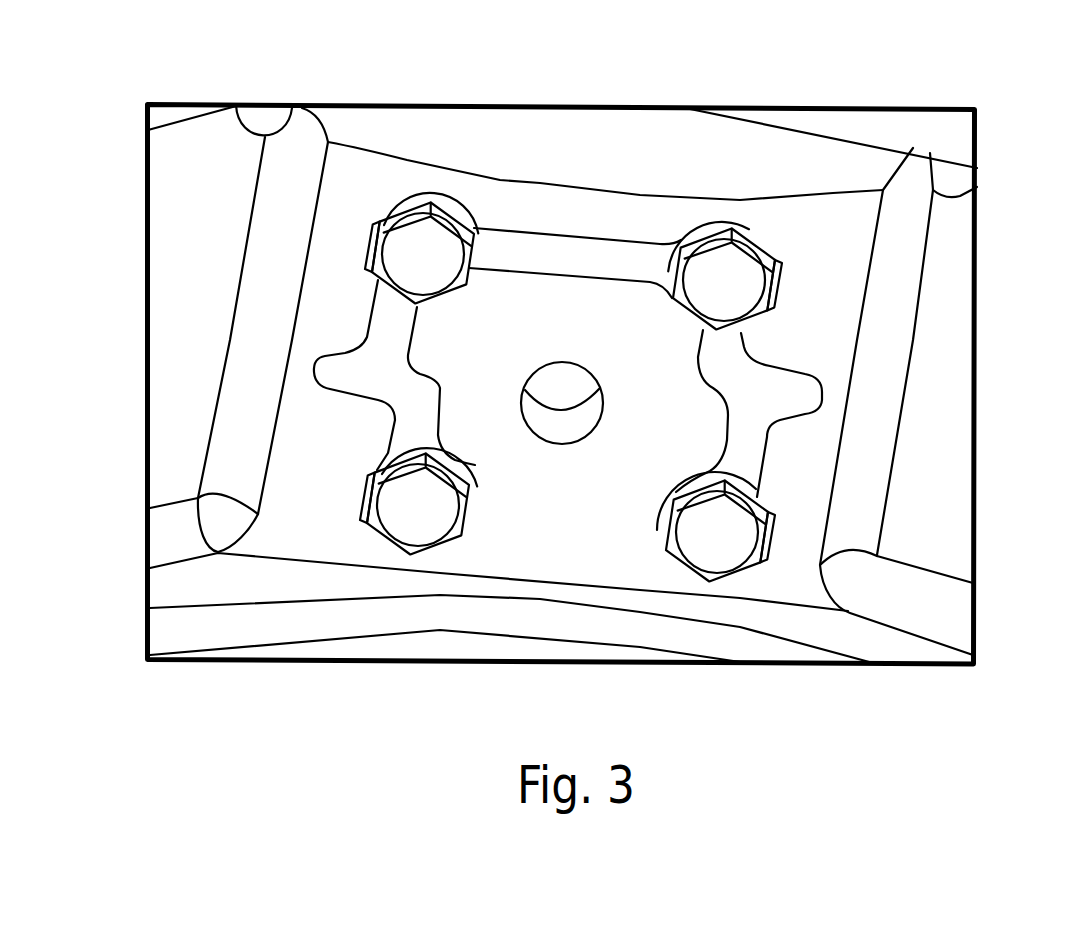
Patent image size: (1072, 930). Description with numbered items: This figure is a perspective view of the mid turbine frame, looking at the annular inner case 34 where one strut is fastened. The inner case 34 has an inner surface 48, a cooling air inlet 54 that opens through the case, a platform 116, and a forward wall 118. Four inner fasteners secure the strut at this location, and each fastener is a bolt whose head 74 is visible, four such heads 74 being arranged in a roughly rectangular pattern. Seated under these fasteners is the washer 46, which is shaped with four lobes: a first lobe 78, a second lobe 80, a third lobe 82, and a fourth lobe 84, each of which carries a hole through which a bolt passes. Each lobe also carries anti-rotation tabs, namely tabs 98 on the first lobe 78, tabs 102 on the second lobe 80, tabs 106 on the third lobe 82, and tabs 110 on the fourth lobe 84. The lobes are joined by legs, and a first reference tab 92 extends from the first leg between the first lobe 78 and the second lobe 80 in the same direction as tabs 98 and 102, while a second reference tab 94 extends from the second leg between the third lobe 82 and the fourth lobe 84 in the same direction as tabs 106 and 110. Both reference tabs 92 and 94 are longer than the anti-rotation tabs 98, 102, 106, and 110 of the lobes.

The inner case 34 is at (175, 531).
The washer 46 is at (592, 232).
The inner surface 48 is at (207, 200).
The cooling air inlet 54 is at (548, 386).
The head 74 is at (422, 262).
The first lobe 78 is at (713, 218).
The second lobe 80 is at (672, 497).
The third lobe 82 is at (460, 200).
The fourth lobe 84 is at (473, 462).
The first reference tab 92 is at (823, 388).
The second reference tab 94 is at (314, 361).
The anti-rotation tabs 98 is at (783, 293).
The anti-rotation tabs 102 is at (775, 527).
The anti-rotation tabs 106 is at (378, 237).
The anti-rotation tabs 110 is at (373, 490).
The platform 116 is at (846, 238).
The forward wall 118 is at (870, 643).